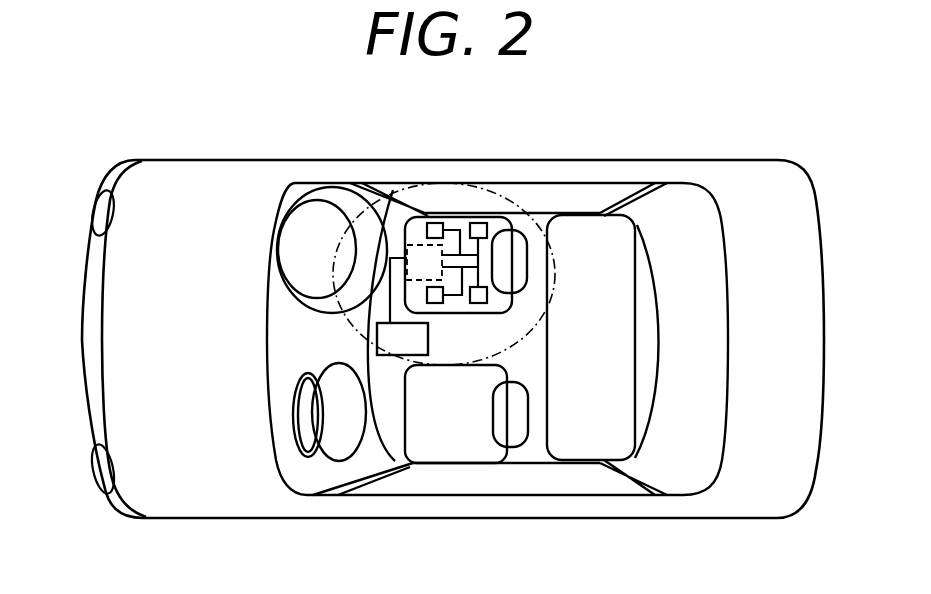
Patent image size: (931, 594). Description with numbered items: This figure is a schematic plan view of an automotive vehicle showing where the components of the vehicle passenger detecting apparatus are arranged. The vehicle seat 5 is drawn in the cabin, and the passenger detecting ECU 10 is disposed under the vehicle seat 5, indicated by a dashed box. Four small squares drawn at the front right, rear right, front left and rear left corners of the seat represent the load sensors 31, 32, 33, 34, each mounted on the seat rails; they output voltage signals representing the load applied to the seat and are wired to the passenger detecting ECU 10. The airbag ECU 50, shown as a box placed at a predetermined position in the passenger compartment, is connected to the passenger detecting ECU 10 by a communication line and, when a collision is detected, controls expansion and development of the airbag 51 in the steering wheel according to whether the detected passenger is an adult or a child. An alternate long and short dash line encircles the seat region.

The vehicle seat 5 is at (499, 219).
The passenger detecting ECU 10 is at (407, 245).
The load sensor 31 is at (430, 223).
The load sensor 32 is at (477, 223).
The load sensor 33 is at (431, 303).
The load sensor 34 is at (477, 303).
The airbag ECU 50 is at (386, 340).
The airbag 51 is at (310, 215).